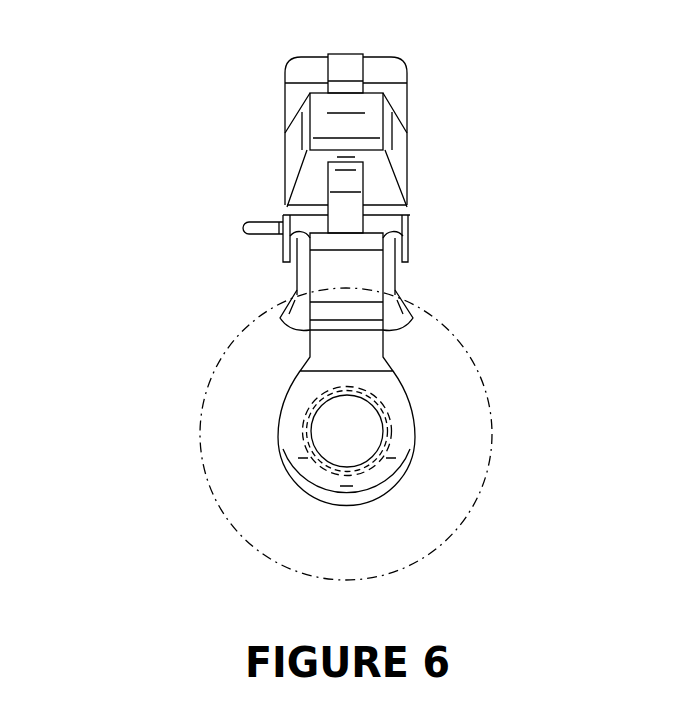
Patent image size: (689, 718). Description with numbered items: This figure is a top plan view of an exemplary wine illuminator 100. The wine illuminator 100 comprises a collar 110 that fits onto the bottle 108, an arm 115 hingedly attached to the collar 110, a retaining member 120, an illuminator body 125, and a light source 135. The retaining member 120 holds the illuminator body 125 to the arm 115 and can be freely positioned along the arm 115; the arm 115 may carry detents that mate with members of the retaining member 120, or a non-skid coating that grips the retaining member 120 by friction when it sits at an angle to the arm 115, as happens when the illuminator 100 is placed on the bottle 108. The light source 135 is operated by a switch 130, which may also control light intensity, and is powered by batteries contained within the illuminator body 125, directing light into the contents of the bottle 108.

The wine illuminator 100 is at (122, 115).
The illuminator body 125 is at (285, 97).
The retaining member 120 is at (285, 172).
The arm 115 is at (365, 195).
The switch 130 is at (236, 233).
The light source 135 is at (388, 332).
The collar 110 is at (302, 364).
The bottle 108 is at (476, 452).